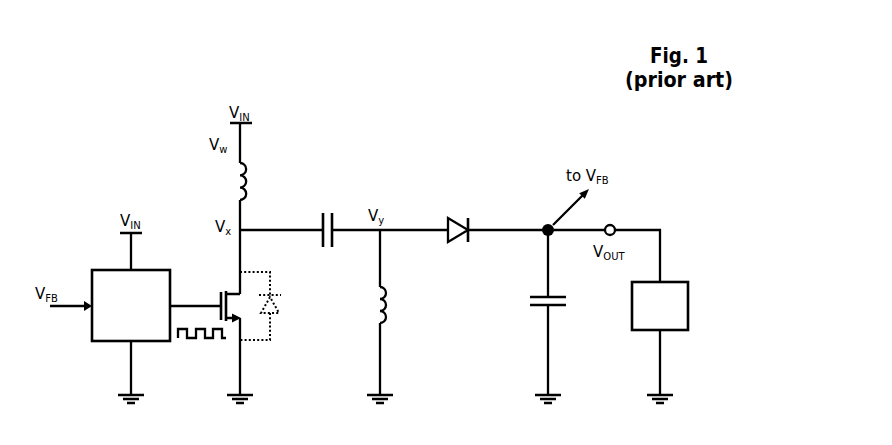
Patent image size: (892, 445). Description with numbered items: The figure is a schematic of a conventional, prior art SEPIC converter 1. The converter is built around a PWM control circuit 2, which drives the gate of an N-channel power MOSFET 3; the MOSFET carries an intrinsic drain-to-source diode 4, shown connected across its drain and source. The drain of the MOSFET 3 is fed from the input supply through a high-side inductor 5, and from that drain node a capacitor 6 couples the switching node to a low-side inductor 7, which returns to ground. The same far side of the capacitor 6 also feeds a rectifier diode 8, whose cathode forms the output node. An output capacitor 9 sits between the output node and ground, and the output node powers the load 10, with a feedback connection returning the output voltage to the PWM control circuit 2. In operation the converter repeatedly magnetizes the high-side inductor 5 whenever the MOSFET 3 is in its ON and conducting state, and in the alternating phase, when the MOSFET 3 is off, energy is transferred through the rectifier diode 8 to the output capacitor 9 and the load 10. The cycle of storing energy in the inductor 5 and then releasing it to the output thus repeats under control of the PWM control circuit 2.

The SEPIC converter 1 is at (93, 116).
The PWM control circuit 2 is at (155, 342).
The N-channel power MOSFET 3 is at (219, 293).
The intrinsic drain-to-source diode 4 is at (280, 306).
The high-side inductor 5 is at (248, 177).
The capacitor 6 is at (333, 250).
The low-side inductor 7 is at (387, 290).
The rectifier diode 8 is at (470, 217).
The output capacitor 9 is at (530, 296).
The load 10 is at (690, 283).